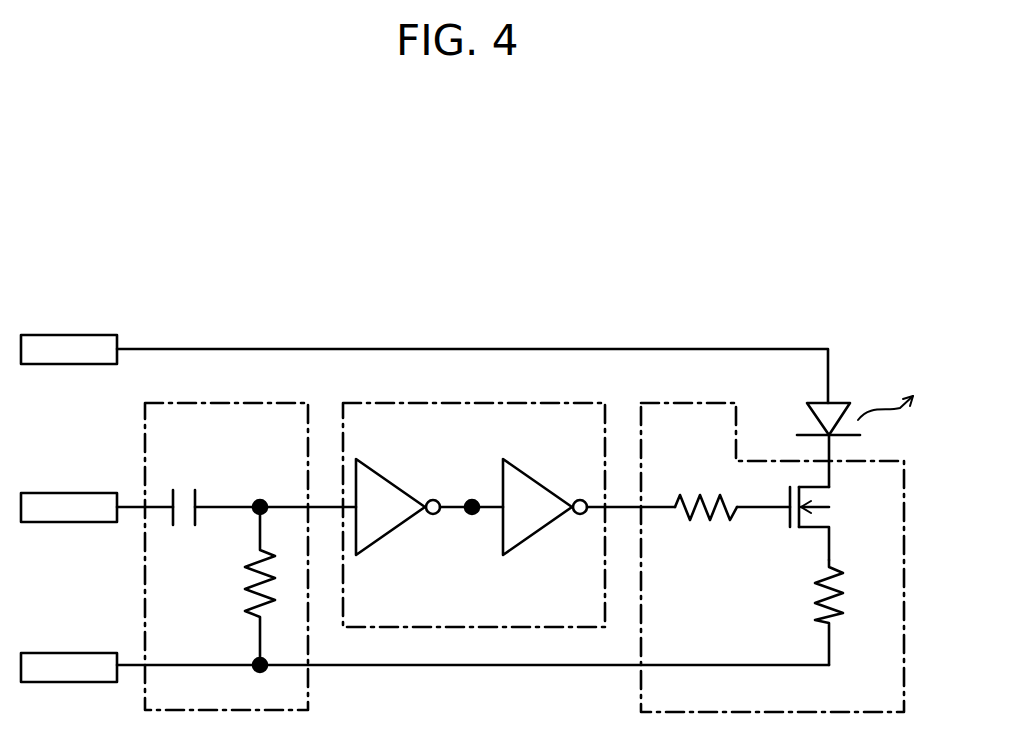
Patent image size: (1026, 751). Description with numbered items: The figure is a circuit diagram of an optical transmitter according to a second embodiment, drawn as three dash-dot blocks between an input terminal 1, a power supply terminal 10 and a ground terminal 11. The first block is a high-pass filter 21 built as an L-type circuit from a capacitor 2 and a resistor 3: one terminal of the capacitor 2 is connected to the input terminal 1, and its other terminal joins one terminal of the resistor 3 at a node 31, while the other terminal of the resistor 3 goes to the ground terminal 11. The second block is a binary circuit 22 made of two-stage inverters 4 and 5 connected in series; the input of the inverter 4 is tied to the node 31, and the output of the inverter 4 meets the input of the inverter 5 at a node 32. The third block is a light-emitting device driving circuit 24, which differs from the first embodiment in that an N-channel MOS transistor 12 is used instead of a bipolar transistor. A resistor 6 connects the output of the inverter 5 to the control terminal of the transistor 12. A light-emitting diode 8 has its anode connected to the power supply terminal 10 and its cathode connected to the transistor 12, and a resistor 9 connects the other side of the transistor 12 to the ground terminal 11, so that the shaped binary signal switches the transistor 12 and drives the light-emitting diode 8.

The input terminal 1 is at (69, 488).
The capacitor 2 is at (184, 488).
The resistor 3 is at (245, 593).
The inverter 4 is at (398, 501).
The inverter 5 is at (545, 500).
The resistor 6 is at (706, 489).
The light-emitting diode 8 is at (843, 441).
The resistor 9 is at (842, 612).
The power supply terminal 10 is at (69, 329).
The ground terminal 11 is at (69, 648).
The N-channel MOS transistor 12 is at (834, 523).
The high-pass filter 21 is at (213, 403).
The binary circuit 22 is at (440, 403).
The light-emitting device driving circuit 24 is at (715, 403).
The node 31 is at (260, 488).
The node 32 is at (472, 527).